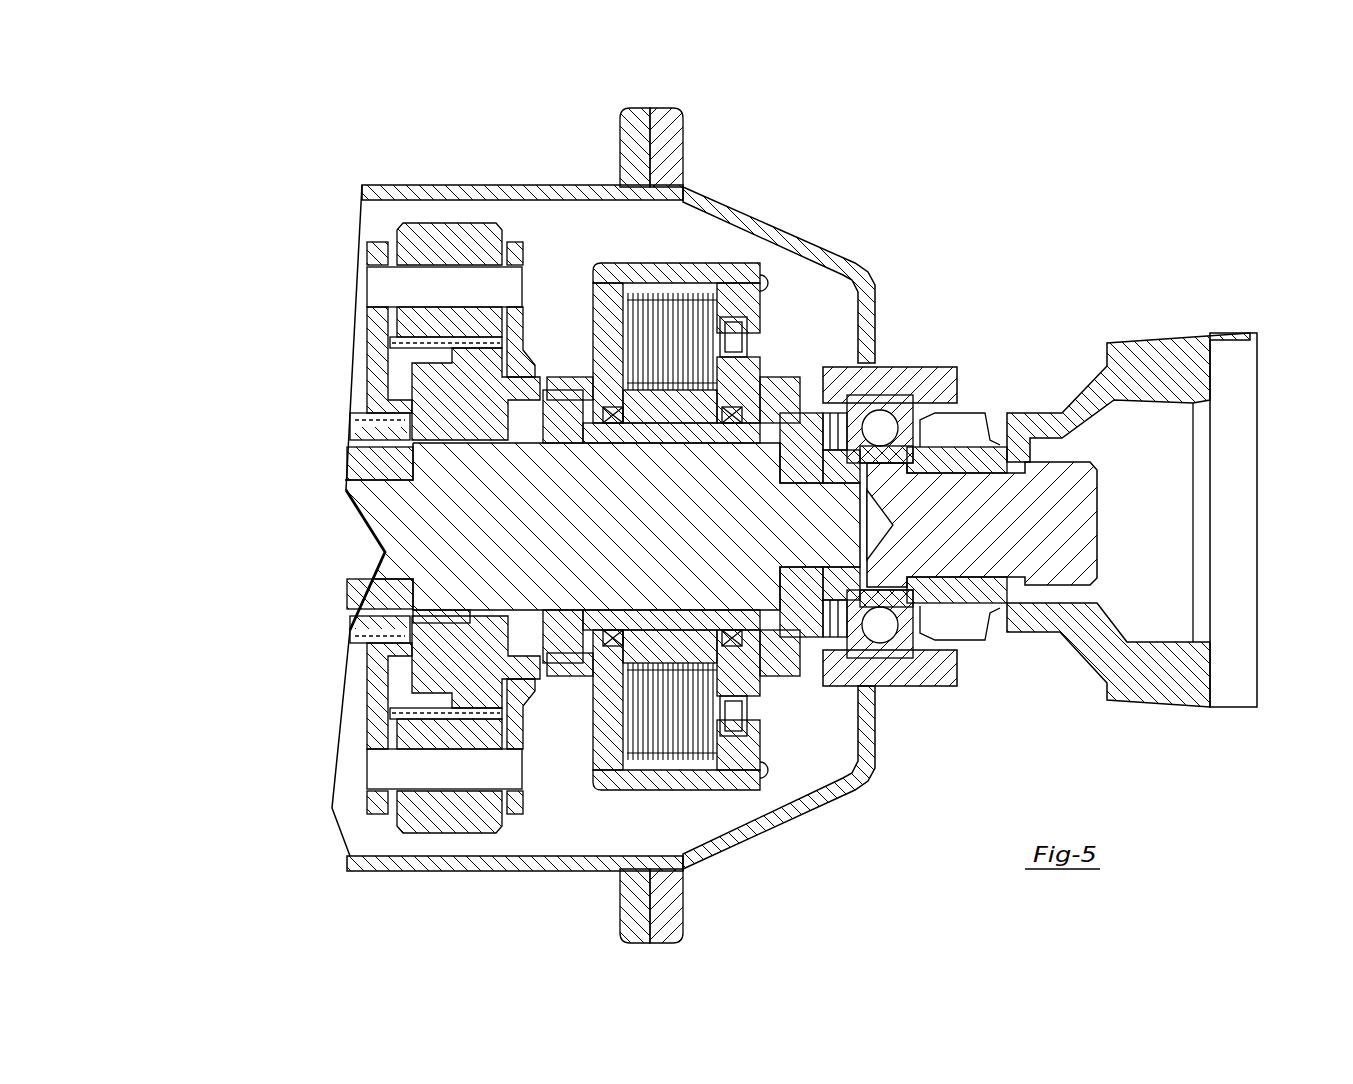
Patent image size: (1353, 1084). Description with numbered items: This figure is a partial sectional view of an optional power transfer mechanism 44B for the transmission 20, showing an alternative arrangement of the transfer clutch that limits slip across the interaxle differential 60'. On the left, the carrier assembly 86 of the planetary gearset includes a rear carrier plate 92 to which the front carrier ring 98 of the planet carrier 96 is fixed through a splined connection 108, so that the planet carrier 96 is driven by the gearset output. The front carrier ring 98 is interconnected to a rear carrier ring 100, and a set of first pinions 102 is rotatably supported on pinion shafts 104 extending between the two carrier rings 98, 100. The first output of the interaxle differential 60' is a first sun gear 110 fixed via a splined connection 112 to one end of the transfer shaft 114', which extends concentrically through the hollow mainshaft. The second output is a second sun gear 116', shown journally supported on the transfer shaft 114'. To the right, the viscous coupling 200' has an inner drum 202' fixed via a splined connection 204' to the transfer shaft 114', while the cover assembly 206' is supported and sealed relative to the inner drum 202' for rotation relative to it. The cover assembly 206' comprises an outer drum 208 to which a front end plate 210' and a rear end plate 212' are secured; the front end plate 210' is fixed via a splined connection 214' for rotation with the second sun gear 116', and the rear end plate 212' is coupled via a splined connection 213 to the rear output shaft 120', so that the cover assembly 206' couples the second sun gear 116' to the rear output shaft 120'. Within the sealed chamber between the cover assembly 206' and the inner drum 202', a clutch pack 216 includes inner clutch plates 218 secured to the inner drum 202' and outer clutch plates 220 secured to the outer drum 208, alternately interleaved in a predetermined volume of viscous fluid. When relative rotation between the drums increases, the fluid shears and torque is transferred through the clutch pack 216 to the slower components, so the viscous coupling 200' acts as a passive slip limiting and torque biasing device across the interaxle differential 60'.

The transmission 20 is at (905, 165).
The power transfer mechanism 44B is at (368, 546).
The interaxle differential 60' is at (444, 519).
The carrier assembly 86 is at (370, 611).
The rear carrier plate 92 is at (362, 443).
The planet carrier 96 is at (383, 832).
The front carrier ring 98 is at (370, 338).
The rear carrier ring 100 is at (515, 812).
The first pinions 102 is at (452, 248).
The pinion shafts 104 is at (460, 790).
The splined connection 108 is at (370, 413).
The first sun gear 110 is at (402, 680).
The splined connection 112 is at (430, 612).
The transfer shaft 114' is at (402, 444).
The second sun gear 116' is at (442, 526).
The rear output shaft 120' is at (1104, 520).
The viscous coupling 200' is at (885, 437).
The inner drum 202' is at (700, 525).
The splined connection 204' is at (670, 594).
The cover assembly 206' is at (664, 257).
The outer drum 208 is at (676, 258).
The front end plate 210' is at (622, 257).
The rear end plate 212' is at (829, 723).
The splined connection 213 is at (800, 398).
The splined connection 214' is at (561, 526).
The clutch pack 216 is at (690, 795).
The inner clutch plates 218 is at (695, 640).
The outer clutch plates 220 is at (698, 755).